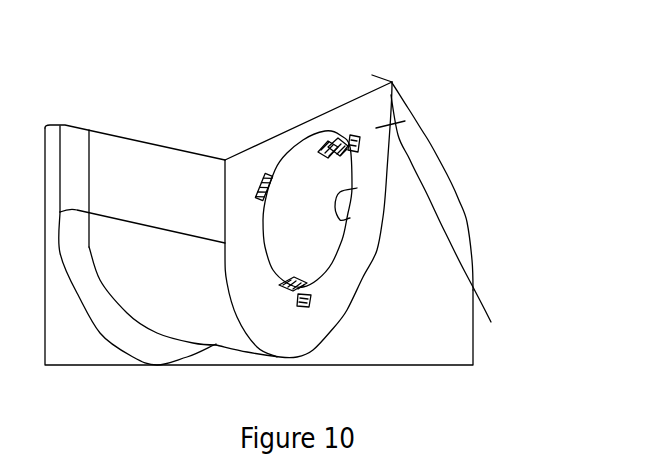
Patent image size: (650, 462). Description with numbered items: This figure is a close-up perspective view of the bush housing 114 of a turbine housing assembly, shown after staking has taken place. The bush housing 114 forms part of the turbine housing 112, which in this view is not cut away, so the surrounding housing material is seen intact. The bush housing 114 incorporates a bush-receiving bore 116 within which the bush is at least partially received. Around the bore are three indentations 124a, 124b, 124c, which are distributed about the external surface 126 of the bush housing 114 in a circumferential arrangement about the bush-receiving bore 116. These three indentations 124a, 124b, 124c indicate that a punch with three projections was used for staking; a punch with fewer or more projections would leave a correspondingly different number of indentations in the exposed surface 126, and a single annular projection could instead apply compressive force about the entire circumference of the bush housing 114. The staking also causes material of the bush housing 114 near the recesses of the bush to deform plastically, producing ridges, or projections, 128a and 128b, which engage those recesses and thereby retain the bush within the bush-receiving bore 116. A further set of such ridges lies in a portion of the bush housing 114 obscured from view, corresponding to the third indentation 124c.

The turbine housing 112 is at (423, 243).
The bush housing 114 is at (378, 159).
The bush-receiving bore 116 is at (353, 188).
The indentation 124a is at (308, 300).
The indentation 124b is at (357, 133).
The indentation 124c is at (253, 173).
The external surface 126 is at (392, 150).
The ridge 128a is at (313, 266).
The ridge 128b is at (323, 173).